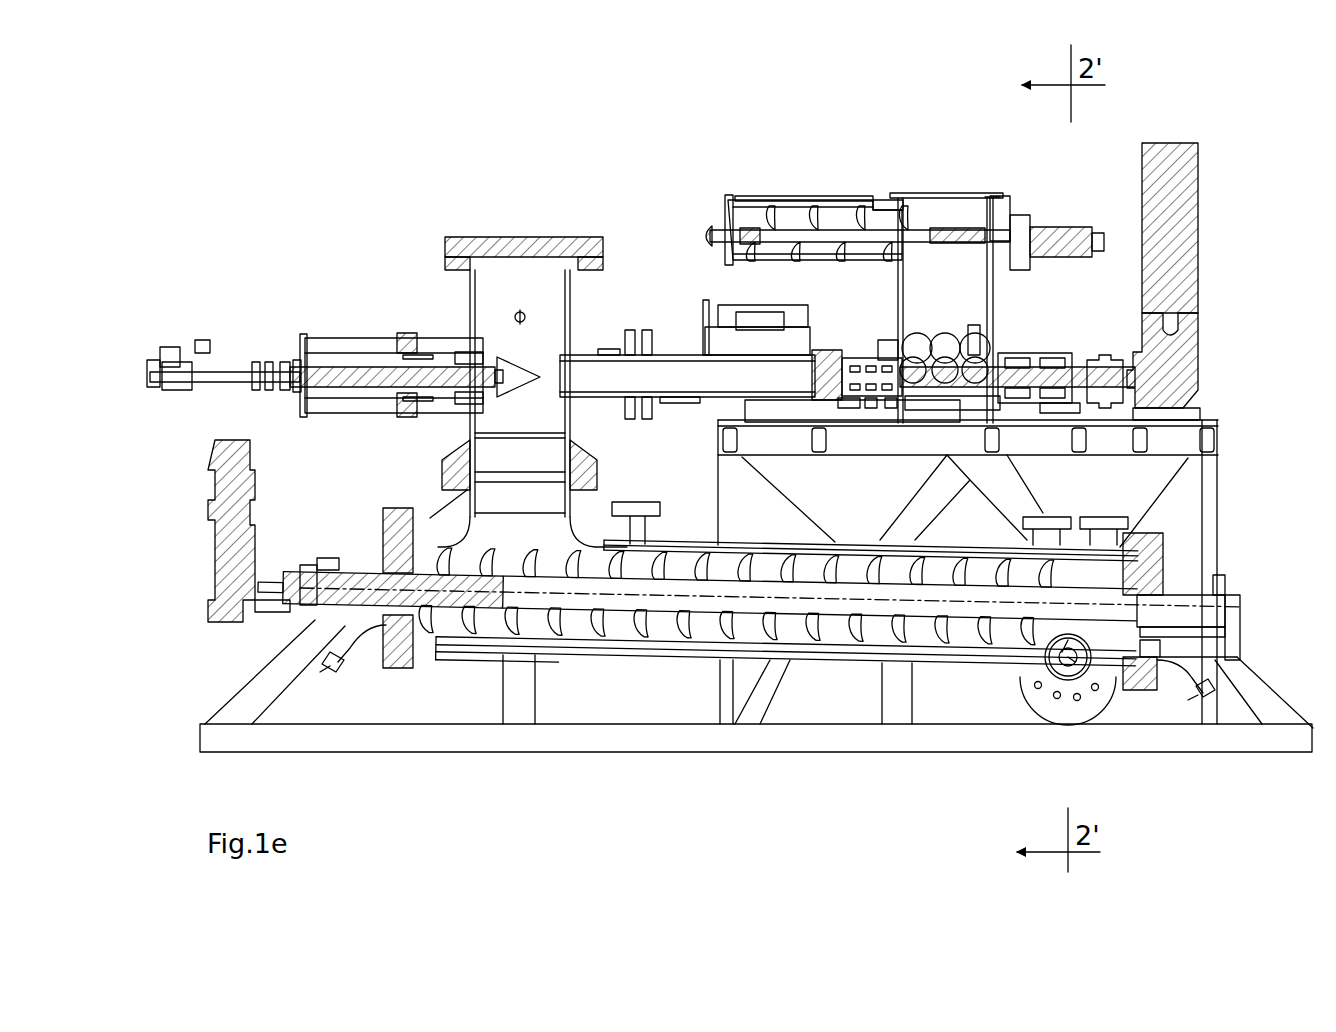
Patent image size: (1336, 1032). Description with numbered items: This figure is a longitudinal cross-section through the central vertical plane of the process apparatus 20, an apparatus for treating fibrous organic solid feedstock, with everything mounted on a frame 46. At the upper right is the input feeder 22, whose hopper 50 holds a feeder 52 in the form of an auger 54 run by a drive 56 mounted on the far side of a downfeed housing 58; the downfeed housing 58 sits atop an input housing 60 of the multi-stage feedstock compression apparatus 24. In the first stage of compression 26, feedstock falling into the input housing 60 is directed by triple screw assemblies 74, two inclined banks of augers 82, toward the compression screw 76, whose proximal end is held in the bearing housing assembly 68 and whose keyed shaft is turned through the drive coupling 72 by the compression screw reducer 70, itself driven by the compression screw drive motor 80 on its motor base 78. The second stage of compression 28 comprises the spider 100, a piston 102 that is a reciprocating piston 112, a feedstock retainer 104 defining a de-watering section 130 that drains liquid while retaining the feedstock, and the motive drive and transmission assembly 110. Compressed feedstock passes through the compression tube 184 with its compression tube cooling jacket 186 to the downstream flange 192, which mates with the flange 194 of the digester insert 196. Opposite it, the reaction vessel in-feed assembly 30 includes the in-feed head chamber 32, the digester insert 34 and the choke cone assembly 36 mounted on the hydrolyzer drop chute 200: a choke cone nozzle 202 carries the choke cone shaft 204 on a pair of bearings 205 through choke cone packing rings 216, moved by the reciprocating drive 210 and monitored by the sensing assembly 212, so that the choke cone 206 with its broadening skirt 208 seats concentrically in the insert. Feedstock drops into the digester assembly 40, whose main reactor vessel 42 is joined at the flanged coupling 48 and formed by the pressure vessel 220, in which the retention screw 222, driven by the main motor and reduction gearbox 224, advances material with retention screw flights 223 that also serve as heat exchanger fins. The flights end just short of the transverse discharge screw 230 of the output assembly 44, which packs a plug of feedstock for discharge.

The process apparatus 20 is at (410, 165).
The input feeder 22 is at (747, 198).
The multi-stage feedstock compression apparatus 24 is at (838, 252).
The first stage of compression 26 is at (890, 357).
The second stage of compression 28 is at (845, 357).
The reaction vessel in-feed assembly 30 is at (585, 247).
The in-feed head chamber 32 is at (518, 272).
The digester insert 34 is at (590, 355).
The choke cone assembly 36 is at (340, 345).
The digester assembly 40 is at (592, 650).
The main reactor vessel 42 is at (613, 645).
The output assembly 44 is at (1068, 680).
The frame 46 is at (1000, 748).
The flanged coupling 48 is at (442, 482).
The hopper 50 is at (767, 198).
The feeder 52 is at (777, 205).
The auger 54 is at (875, 200).
The drive 56 is at (1068, 232).
The downfeed housing 58 is at (985, 197).
The input housing 60 is at (1003, 308).
The bearing housing assembly 68 is at (1045, 352).
The compression screw reducer 70 is at (1193, 333).
The drive coupling 72 is at (1105, 356).
The triple screw assemblies 74 is at (974, 325).
The compression screw 76 is at (1062, 413).
The motor base 78 is at (1192, 402).
The compression screw drive motor 80 is at (1196, 186).
The augers 82 is at (950, 322).
The spider 100 is at (740, 405).
The piston 102 is at (940, 408).
The feedstock retainer 104 is at (840, 408).
The motive drive and transmission assembly 110 is at (869, 408).
The reciprocating piston 112 is at (890, 408).
The de-watering section 130 is at (825, 400).
The compression tube 184 is at (682, 355).
The compression tube cooling jacket 186 is at (678, 402).
The downstream flange 192 is at (645, 330).
The flange 194 is at (615, 402).
The digester insert 196 is at (612, 352).
The hydrolyzer drop chute 200 is at (562, 302).
The choke cone nozzle 202 is at (433, 350).
The choke cone shaft 204 is at (466, 362).
The bearings 205 is at (450, 368).
The choke cone 206 is at (522, 375).
The broadening skirt 208 is at (473, 353).
The reciprocating drive 210 is at (253, 358).
The sensing assembly 212 is at (283, 355).
The choke cone packing rings 216 is at (416, 410).
The pressure vessel 220 is at (706, 645).
The retention screw 222 is at (722, 645).
The retention screw flights 223 is at (818, 632).
The main motor and reduction gearbox 224 is at (218, 556).
The discharge screw 230 is at (1085, 677).